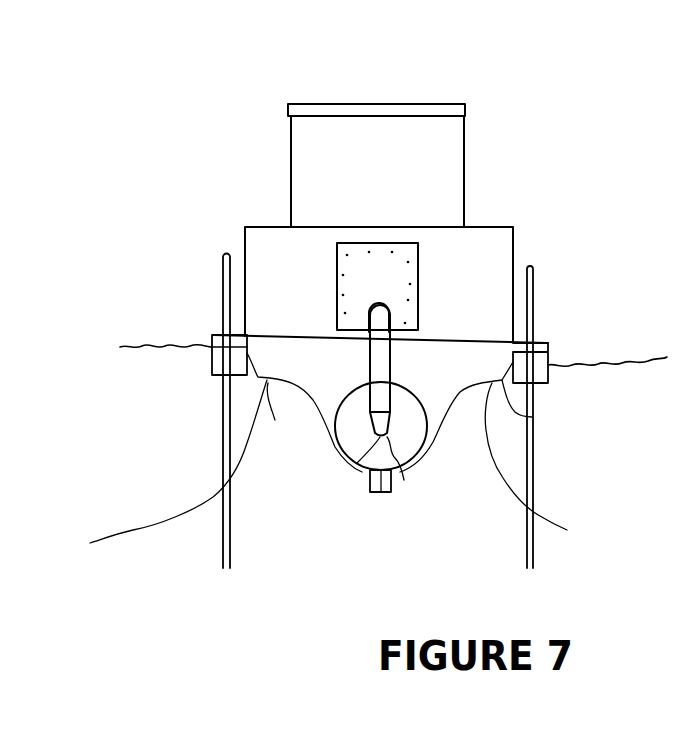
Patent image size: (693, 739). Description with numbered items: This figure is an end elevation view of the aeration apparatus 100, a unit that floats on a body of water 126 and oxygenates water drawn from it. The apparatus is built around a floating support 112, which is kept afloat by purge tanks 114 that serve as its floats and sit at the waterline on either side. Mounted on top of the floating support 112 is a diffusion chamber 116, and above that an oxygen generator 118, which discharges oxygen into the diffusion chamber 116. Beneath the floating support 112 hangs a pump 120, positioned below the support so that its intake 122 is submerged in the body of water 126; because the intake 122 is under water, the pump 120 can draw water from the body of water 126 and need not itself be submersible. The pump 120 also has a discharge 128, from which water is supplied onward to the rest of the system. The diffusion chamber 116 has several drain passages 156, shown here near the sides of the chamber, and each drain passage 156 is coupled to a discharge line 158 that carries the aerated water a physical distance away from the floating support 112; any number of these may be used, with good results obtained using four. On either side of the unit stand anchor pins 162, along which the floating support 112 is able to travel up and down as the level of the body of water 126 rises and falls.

The aeration apparatus 100 is at (143, 122).
The floating support 112 is at (320, 392).
The purge tanks 114 is at (213, 362).
The diffusion chamber 116 is at (245, 242).
The oxygen generator 118 is at (465, 158).
The pump 120 is at (404, 480).
The intake 122 is at (357, 463).
The body of water 126 is at (0, 362).
The discharge 128 is at (383, 368).
The drain passages 156 is at (542, 418).
The discharge line 158 is at (182, 517).
The anchor pins 162 is at (223, 284).